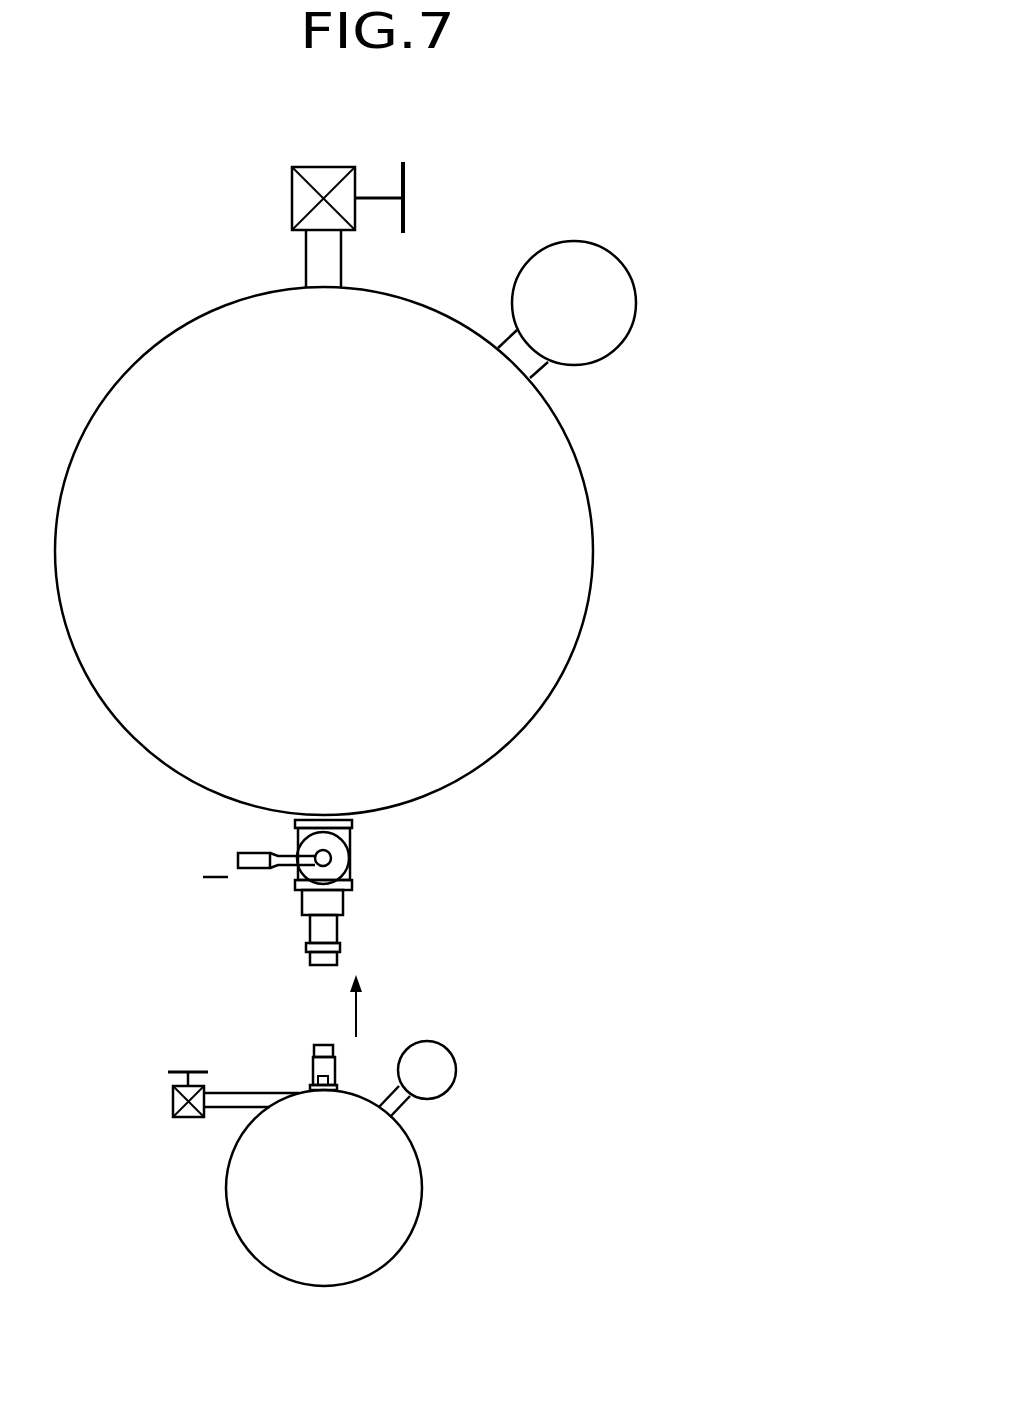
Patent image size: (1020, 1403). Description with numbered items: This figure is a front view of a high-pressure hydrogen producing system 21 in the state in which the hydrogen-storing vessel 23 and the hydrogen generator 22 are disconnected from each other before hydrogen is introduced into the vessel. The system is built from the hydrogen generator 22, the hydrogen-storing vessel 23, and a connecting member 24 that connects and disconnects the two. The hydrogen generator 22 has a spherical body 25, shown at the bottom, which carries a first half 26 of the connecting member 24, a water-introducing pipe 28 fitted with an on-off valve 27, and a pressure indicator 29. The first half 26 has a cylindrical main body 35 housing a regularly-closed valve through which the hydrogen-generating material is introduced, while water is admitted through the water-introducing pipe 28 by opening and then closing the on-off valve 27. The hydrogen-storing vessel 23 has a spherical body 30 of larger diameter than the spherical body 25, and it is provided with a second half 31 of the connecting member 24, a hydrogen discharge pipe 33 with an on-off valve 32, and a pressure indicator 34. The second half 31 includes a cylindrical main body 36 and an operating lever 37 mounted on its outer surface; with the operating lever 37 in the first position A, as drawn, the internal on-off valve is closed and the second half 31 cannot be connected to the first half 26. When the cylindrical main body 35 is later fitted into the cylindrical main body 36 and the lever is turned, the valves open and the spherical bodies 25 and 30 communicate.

The high-pressure producing system 21 is at (444, 474).
The hydrogen generator 22 is at (319, 1193).
The hydrogen-storing vessel 23 is at (598, 597).
The connecting member 24 is at (282, 945).
The spherical body 25 is at (283, 1258).
The first half 26 is at (304, 1068).
The on-off valve 27 is at (173, 1100).
The water-introducing pipe 28 is at (222, 1108).
The pressure indicator 29 is at (456, 1063).
The spherical body 30 is at (515, 717).
The second half 31 is at (290, 882).
The on-off valve 32 is at (292, 180).
The hydrogen discharge pipe 33 is at (306, 253).
The pressure indicator 34 is at (625, 272).
The cylindrical main body 35 is at (345, 1067).
The cylindrical main body 36 is at (340, 897).
The operating lever 37 is at (247, 852).